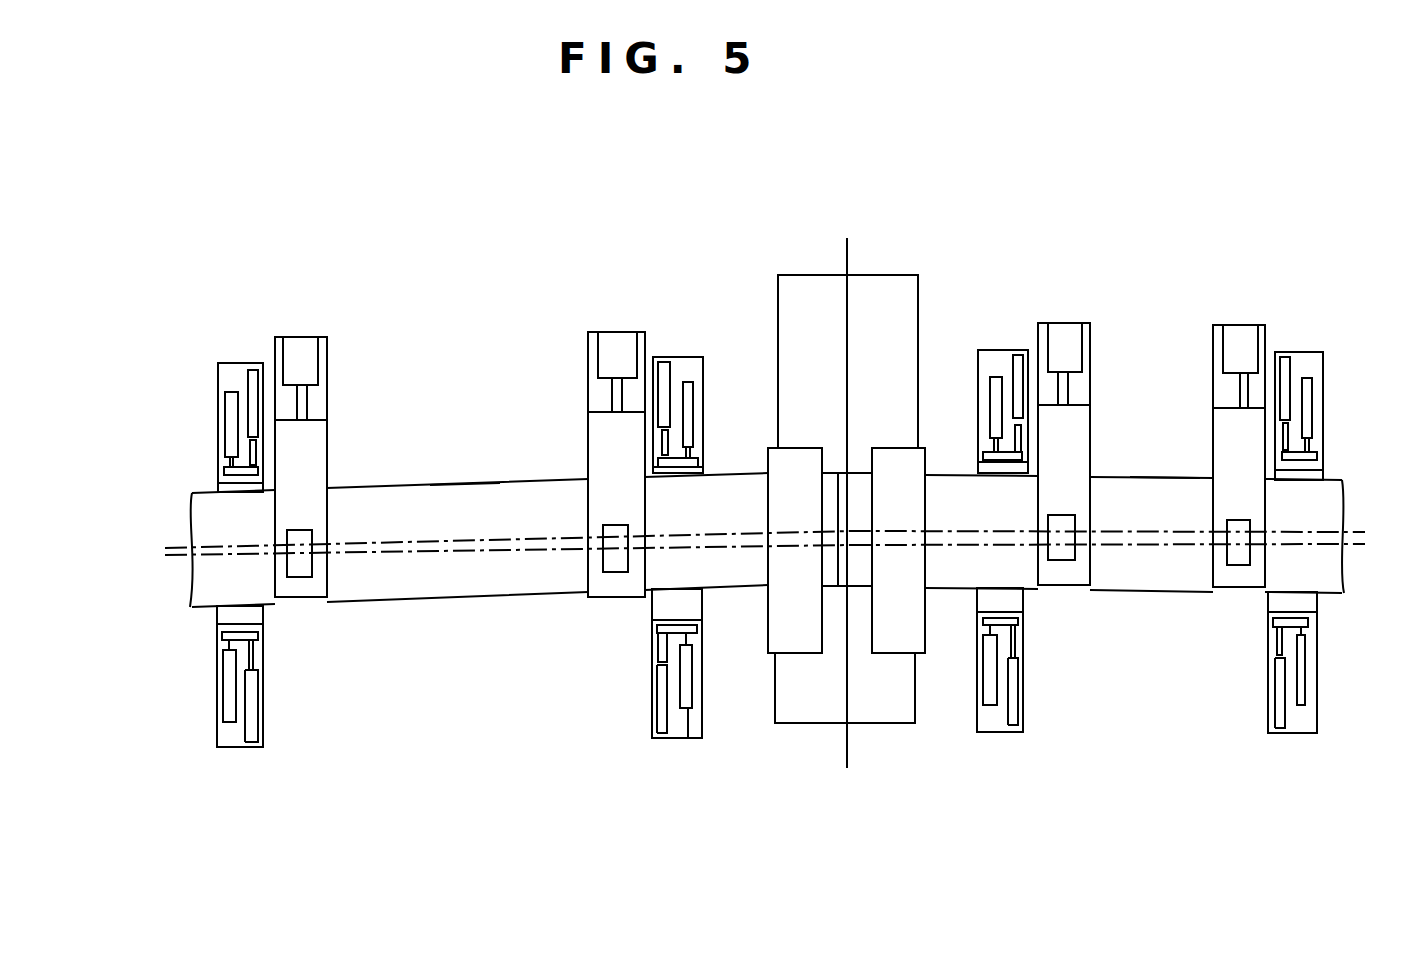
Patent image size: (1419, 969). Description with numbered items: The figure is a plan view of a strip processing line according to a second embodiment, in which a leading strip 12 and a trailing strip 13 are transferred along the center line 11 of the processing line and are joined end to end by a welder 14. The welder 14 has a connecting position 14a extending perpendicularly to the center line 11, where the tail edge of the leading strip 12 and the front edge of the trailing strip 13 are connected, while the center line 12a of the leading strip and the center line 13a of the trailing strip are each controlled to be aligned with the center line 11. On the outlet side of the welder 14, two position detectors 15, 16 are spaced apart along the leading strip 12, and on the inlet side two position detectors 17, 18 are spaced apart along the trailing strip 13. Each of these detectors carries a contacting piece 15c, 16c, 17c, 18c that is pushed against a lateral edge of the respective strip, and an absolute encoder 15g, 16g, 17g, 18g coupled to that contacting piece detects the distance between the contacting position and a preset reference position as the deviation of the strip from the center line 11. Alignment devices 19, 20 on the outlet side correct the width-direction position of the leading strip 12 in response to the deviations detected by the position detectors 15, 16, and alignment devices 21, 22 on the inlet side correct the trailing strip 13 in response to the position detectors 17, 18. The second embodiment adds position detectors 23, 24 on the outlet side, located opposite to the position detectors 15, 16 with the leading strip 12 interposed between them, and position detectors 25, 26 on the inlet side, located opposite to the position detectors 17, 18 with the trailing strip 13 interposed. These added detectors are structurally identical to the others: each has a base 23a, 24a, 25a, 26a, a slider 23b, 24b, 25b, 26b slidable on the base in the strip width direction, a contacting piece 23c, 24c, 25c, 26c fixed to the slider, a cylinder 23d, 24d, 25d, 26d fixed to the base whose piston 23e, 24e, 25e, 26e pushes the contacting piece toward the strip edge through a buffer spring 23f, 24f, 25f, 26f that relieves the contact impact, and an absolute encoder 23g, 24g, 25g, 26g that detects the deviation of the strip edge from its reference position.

The center line of the processing line 11 is at (485, 552).
The leading strip 12 is at (1135, 595).
The center line of the leading strip 12a is at (1160, 530).
The trailing strip 13 is at (408, 600).
The center line of the trailing strip 13a is at (465, 540).
The welder 14 is at (895, 275).
The connecting position 14a is at (850, 250).
The position detector 15 is at (1347, 368).
The contacting piece 15c is at (1315, 456).
The absolute encoder 15g is at (1305, 378).
The position detector 16 is at (973, 370).
The contacting piece 16c is at (988, 455).
The absolute encoder 16g is at (995, 378).
The position detector 17 is at (713, 365).
The contacting piece 17c is at (700, 460).
The absolute encoder 17g is at (690, 380).
The position detector 18 is at (198, 377).
The contacting piece 18c is at (225, 463).
The absolute encoder 18g is at (228, 397).
The alignment device 19 is at (1240, 325).
The alignment device 20 is at (1068, 323).
The alignment device 21 is at (618, 332).
The alignment device 22 is at (300, 337).
The position detector 23 is at (1302, 708).
The base 23a is at (1277, 735).
The slider 23b is at (1305, 605).
The contacting piece 23c is at (1275, 620).
The cylinder 23d is at (1277, 712).
The piston 23e is at (1273, 660).
The buffer spring 23f is at (1277, 640).
The absolute encoder 23g is at (1298, 678).
The position detector 24 is at (1002, 711).
The base 24a is at (1015, 735).
The slider 24b is at (1013, 606).
The contacting piece 24c is at (1018, 625).
The cylinder 24d is at (1015, 728).
The piston 24e is at (1022, 690).
The buffer spring 24f is at (1015, 660).
The absolute encoder 24g is at (980, 695).
The position detector 25 is at (663, 721).
The base 25a is at (688, 740).
The slider 25b is at (677, 614).
The contacting piece 25c is at (660, 630).
The cylinder 25d is at (673, 742).
The piston 25e is at (655, 735).
The buffer spring 25f is at (658, 655).
The absolute encoder 25g is at (690, 695).
The position detector 26 is at (246, 731).
The base 26a is at (262, 750).
The slider 26b is at (258, 634).
The contacting piece 26c is at (258, 665).
The cylinder 26d is at (255, 750).
The piston 26e is at (258, 735).
The buffer spring 26f is at (258, 690).
The absolute encoder 26g is at (225, 728).